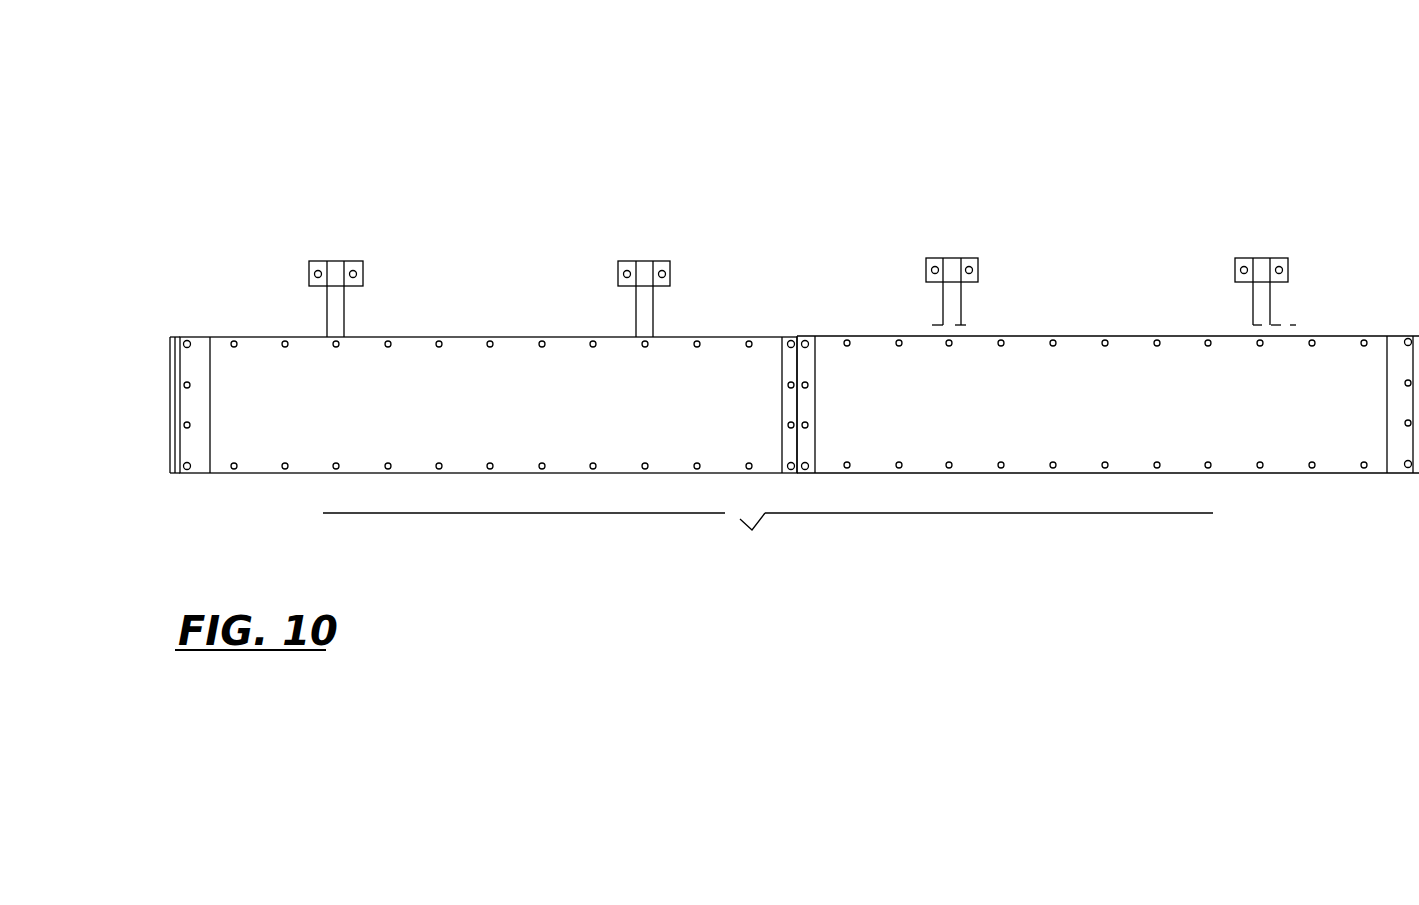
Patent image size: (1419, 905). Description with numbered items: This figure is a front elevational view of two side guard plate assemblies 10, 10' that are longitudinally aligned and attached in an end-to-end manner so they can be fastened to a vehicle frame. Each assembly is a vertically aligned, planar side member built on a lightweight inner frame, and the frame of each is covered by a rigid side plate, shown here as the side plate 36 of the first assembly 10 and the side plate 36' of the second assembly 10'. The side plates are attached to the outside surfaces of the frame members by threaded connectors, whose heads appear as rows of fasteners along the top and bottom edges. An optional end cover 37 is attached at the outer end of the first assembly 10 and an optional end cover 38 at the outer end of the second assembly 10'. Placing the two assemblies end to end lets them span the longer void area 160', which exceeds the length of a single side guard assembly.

The side guard assembly 10 is at (457, 285).
The second side guard plate assembly 10' is at (1108, 285).
The side plate 36 is at (488, 405).
The side plate of second assembly 36' is at (1108, 404).
The end cover 37 is at (171, 473).
The end cover 38 is at (1418, 510).
The longer void area 160' is at (768, 545).